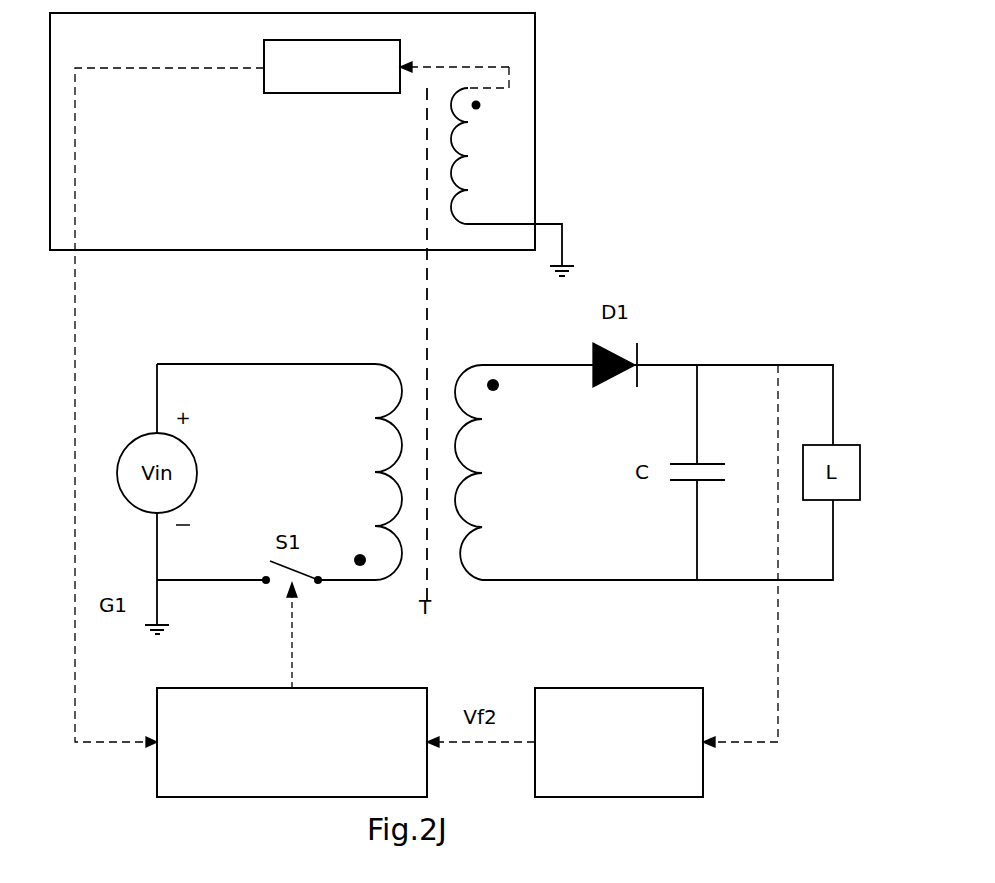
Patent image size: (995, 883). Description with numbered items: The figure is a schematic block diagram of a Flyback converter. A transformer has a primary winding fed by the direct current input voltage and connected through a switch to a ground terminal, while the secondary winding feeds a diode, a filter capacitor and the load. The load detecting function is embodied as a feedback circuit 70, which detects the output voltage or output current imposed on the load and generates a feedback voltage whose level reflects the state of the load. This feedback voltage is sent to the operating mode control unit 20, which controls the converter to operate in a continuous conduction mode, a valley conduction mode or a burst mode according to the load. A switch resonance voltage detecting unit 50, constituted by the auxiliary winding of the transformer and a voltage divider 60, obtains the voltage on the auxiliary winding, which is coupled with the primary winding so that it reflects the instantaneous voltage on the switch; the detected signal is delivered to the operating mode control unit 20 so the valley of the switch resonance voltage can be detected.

The operating mode control unit 20 is at (292, 742).
The switch resonance voltage detecting unit 50 is at (324, 380).
The voltage divider 60 is at (332, 66).
The feedback circuit 70 is at (619, 742).